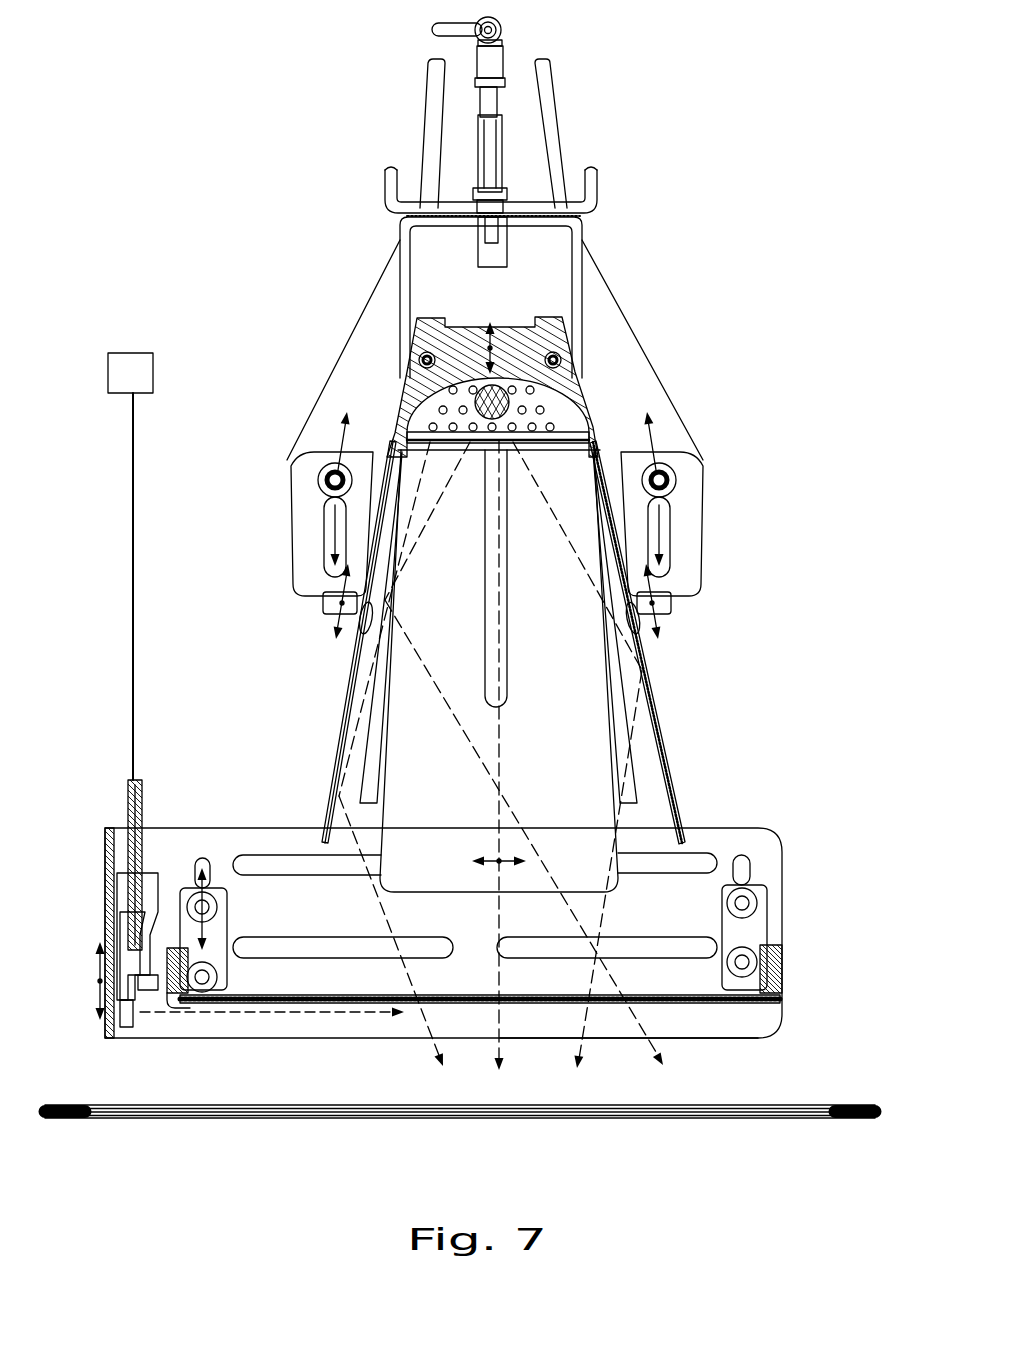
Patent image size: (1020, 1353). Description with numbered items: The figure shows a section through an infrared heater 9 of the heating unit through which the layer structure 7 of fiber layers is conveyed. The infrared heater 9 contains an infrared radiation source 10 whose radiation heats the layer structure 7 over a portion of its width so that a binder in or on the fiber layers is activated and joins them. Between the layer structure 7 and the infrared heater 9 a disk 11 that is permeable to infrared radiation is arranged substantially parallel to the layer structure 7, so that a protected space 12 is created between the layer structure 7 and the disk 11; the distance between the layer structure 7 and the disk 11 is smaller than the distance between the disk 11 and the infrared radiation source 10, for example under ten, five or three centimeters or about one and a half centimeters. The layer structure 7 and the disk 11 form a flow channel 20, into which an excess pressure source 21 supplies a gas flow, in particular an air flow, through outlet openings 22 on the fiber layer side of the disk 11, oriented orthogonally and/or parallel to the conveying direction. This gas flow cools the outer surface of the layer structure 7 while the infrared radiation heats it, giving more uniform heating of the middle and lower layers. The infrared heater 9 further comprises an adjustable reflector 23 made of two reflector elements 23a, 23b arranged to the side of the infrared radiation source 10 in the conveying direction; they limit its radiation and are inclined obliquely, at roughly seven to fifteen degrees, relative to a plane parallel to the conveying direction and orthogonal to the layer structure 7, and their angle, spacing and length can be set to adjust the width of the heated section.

The layer structure 7 is at (370, 1117).
The infrared heater 9 is at (754, 100).
The infrared radiation source 10 is at (495, 403).
The disk 11 is at (343, 995).
The protected space 12 is at (735, 1080).
The flow channel 20 is at (632, 1096).
The excess pressure source 21 is at (112, 358).
The outlet openings 22 is at (142, 1038).
The reflector 23 is at (690, 654).
The reflector element 23a is at (804, 734).
The reflector element 23b is at (318, 772).